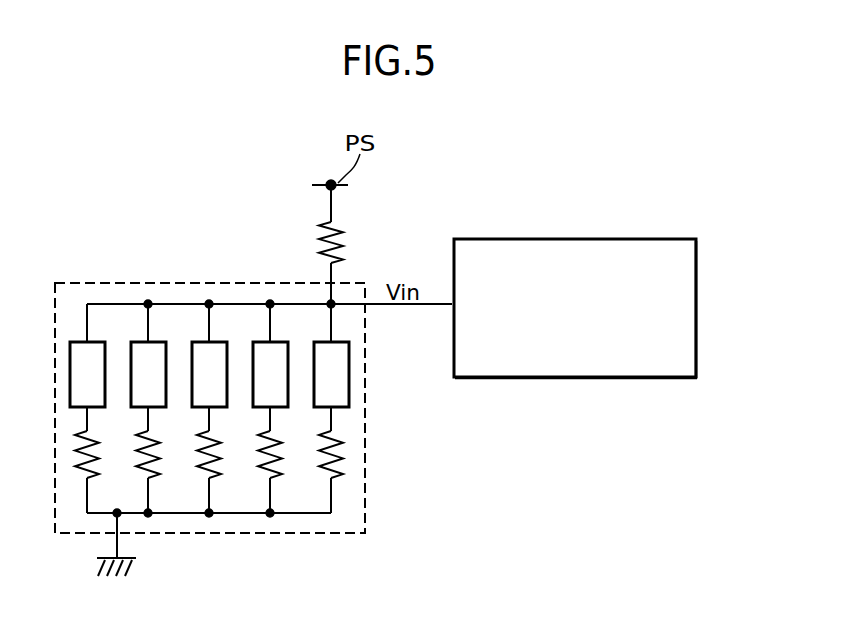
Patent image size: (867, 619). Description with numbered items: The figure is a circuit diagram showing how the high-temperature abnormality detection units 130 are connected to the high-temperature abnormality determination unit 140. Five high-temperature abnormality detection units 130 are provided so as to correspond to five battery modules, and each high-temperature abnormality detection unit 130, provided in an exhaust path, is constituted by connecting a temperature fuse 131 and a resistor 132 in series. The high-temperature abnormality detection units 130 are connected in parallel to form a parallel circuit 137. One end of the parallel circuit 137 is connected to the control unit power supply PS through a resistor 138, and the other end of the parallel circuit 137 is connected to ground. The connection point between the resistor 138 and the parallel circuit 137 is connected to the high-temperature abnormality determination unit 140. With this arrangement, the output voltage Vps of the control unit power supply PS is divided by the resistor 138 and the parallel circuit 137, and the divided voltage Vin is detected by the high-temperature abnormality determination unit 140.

The high-temperature abnormality detection unit 130 is at (296, 438).
The temperature fuse 131 is at (349, 380).
The resistor 132 is at (341, 453).
The parallel circuit 137 is at (345, 534).
The resistor 138 is at (343, 240).
The high-temperature abnormality determination unit 140 is at (632, 237).